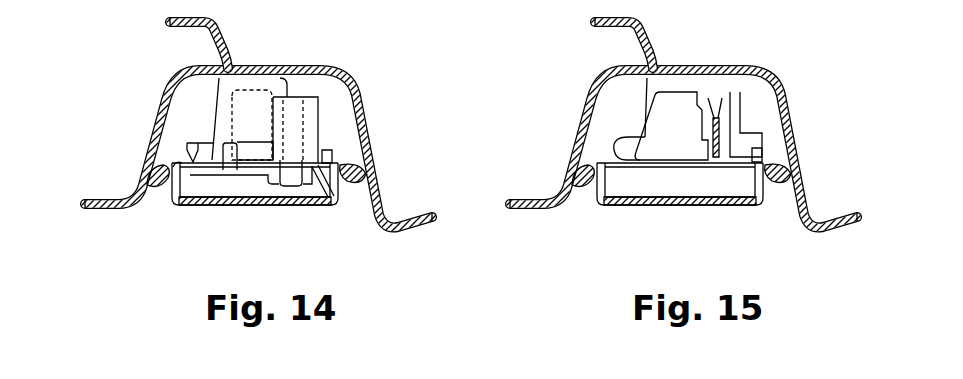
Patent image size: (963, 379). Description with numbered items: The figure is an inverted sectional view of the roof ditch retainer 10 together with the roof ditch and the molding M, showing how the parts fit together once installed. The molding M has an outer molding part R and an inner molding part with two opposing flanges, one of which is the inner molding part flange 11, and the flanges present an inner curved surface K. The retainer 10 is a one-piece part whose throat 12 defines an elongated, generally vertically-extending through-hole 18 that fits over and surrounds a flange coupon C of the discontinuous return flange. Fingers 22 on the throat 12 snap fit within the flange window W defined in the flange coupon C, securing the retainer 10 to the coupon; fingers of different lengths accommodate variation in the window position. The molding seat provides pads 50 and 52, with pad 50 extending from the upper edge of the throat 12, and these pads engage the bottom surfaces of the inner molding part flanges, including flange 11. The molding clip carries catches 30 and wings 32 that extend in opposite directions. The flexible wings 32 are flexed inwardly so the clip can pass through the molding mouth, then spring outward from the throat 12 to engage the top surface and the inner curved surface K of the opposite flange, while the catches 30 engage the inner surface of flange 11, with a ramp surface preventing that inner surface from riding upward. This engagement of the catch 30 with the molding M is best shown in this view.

In FIG. 14, the roof ditch retainer 10 is at (178, 115).
In FIG. 15, the roof ditch retainer 10 is at (757, 107).
In FIG. 14, the inner molding part flange 11 is at (320, 150).
In FIG. 14, the throat 12 is at (206, 160).
In FIG. 15, the through-hole 18 is at (723, 112).
In FIG. 15, the finger 22 is at (708, 115).
In FIG. 14, the catch 30 is at (316, 165).
In FIG. 14, the wing 32 is at (180, 165).
In FIG. 14, the pad 50 is at (328, 152).
In FIG. 15, the pad 50 is at (758, 148).
In FIG. 14, the pad 52 is at (197, 147).
In FIG. 15, the pad 52 is at (615, 150).
In FIG. 14, the inner curved surface K is at (182, 209).
In FIG. 14, the molding M is at (242, 207).
In FIG. 14, the outer molding part R is at (168, 169).
In FIG. 15, the outer molding part R is at (590, 170).
In FIG. 15, the flange coupon C is at (711, 152).
In FIG. 15, the flange window W is at (720, 108).